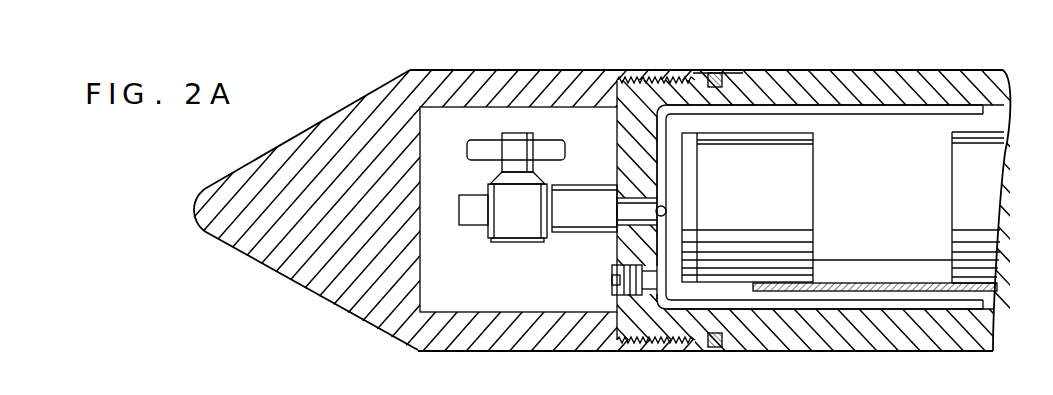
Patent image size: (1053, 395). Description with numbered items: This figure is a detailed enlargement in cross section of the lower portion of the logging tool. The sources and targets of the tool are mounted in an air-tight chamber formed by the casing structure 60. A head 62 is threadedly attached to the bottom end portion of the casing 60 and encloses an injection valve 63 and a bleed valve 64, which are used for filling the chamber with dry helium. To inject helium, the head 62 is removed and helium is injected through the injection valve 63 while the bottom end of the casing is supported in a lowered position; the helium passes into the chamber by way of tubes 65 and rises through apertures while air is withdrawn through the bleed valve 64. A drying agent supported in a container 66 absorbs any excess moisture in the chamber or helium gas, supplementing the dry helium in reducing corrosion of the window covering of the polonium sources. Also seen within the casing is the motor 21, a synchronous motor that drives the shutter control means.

The motor 21 is at (985, 198).
The casing structure 60 is at (790, 70).
The head 62 is at (441, 70).
The injection valve 63 is at (534, 140).
The bleed valve 64 is at (610, 270).
The tubes 65 is at (877, 110).
The container 66 is at (815, 176).